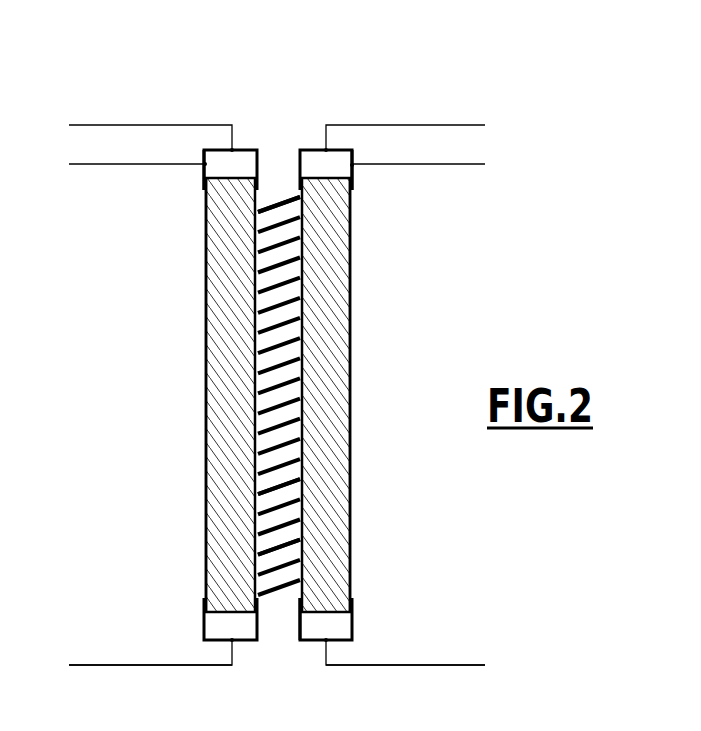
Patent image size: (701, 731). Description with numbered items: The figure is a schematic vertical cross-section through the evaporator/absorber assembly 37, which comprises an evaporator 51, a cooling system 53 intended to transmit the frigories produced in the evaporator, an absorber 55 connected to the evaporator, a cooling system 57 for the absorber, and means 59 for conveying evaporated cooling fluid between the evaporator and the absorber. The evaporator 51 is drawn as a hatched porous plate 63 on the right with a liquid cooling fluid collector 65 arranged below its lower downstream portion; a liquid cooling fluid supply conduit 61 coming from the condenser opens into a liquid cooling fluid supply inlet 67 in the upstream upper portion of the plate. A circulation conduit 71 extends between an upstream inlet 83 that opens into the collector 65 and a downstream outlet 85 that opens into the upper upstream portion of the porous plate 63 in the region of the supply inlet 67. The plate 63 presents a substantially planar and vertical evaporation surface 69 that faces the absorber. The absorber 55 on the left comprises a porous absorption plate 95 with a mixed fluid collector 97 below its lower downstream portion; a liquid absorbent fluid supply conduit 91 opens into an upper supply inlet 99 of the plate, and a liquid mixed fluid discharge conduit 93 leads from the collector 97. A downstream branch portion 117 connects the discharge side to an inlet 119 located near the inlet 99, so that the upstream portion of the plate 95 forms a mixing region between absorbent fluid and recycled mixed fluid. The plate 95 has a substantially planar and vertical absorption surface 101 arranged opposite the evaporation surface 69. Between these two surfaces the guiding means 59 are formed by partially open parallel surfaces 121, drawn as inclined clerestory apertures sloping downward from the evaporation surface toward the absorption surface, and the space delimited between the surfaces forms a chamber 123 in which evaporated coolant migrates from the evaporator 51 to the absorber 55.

The evaporator/absorber assembly 37 is at (356, 92).
The liquid absorbent fluid supply conduit 91 is at (92, 125).
The upper supply inlet 99 is at (232, 150).
The chamber 123 is at (277, 190).
The liquid cooling fluid supply inlet 67 is at (326, 150).
The liquid cooling fluid supply conduit 61 is at (449, 125).
The downstream branch portion 117 is at (97, 165).
The inlet 119 is at (205, 165).
The downstream outlet 85 is at (353, 166).
The circulation conduit 71 is at (445, 165).
The porous absorption plate 95 is at (227, 273).
The porous plate 63 is at (330, 273).
The evaporation surface 69 is at (292, 322).
The absorber 55 is at (203, 402).
The evaporator 51 is at (358, 462).
The absorption surface 101 is at (262, 490).
The partially open parallel surfaces 121 is at (280, 545).
The mixed fluid collector 97 is at (204, 622).
The upstream inlet 83 is at (326, 640).
The cooling system 57 is at (92, 667).
The liquid mixed fluid discharge conduit 93 is at (117, 666).
The means for conveying evaporated cooling fluid 59 is at (279, 642).
The liquid cooling fluid collector 65 is at (308, 645).
The cooling system 53 is at (470, 668).